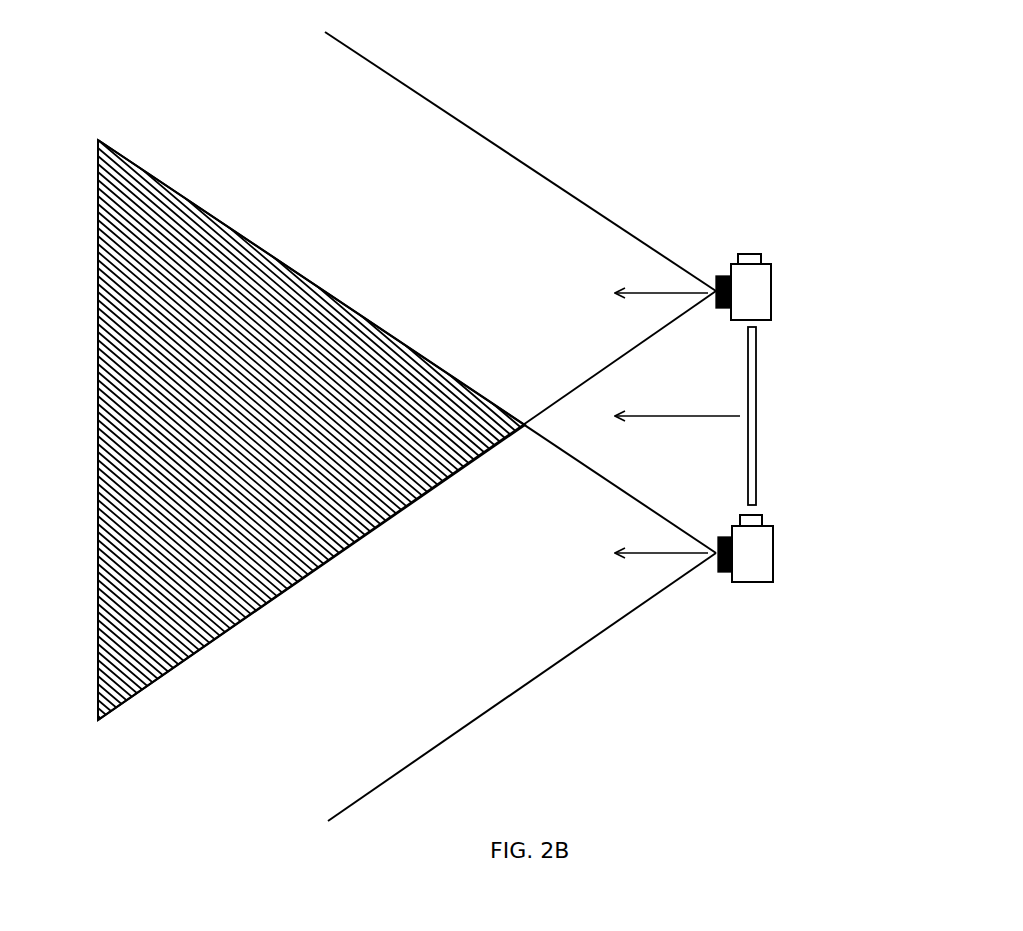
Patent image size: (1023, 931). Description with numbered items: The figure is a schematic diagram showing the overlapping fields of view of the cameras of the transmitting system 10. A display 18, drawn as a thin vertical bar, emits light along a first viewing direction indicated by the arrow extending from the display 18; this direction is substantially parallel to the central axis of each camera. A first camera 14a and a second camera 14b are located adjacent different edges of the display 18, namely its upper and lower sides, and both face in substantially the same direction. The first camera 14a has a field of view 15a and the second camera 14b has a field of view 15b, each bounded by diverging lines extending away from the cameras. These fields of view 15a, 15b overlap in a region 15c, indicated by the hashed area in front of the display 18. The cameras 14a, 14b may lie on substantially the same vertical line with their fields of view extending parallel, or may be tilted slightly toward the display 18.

The transmitting system 10 is at (853, 342).
The first camera 14a is at (763, 260).
The second camera 14b is at (763, 525).
The field of view of first camera 15a is at (587, 237).
The field of view of second camera 15b is at (590, 631).
The overlap region 15c is at (289, 299).
The display 18 is at (757, 437).